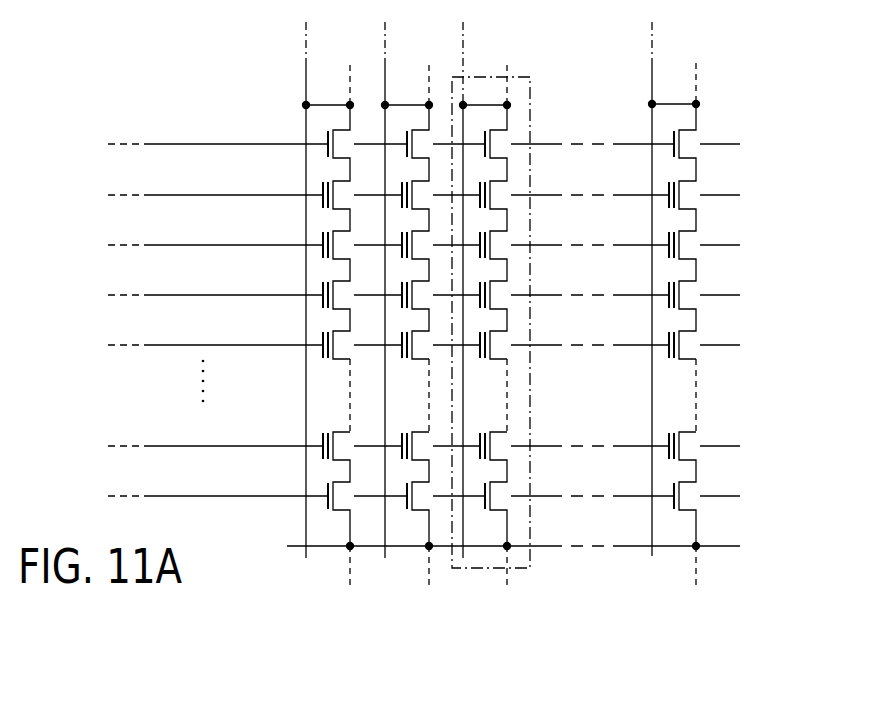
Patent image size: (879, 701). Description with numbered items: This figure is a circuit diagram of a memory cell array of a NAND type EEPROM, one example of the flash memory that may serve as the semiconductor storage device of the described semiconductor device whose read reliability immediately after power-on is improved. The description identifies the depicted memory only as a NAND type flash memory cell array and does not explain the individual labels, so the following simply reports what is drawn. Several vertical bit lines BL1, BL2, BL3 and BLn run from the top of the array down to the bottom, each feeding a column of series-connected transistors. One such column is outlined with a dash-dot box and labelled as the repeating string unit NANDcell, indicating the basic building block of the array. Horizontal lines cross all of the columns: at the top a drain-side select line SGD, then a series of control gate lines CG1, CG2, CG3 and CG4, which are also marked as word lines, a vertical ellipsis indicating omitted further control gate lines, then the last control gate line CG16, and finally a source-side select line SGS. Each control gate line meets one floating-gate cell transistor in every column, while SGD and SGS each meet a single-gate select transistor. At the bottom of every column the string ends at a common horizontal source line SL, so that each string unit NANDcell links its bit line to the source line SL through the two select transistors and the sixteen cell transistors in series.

The bit line 1 BL1 is at (316, 305).
The bit line 2 BL2 is at (394, 305).
The bit line 3 BL3 is at (472, 305).
The bit line n BLn is at (661, 304).
The NAND cell NANDcell is at (498, 70).
The drain side select gate line SGD is at (424, 132).
The control gate line 1 (word line 1) CG1 is at (424, 183).
The control gate line 2 (word line 2) CG2 is at (424, 233).
The control gate line 3 (word line 3) CG3 is at (424, 283).
The control gate line 4 (word line 4) CG4 is at (424, 333).
The control gate line 16 (word line 16) CG16 is at (424, 434).
The source side select gate line SGS is at (424, 484).
The source line SL is at (530, 547).